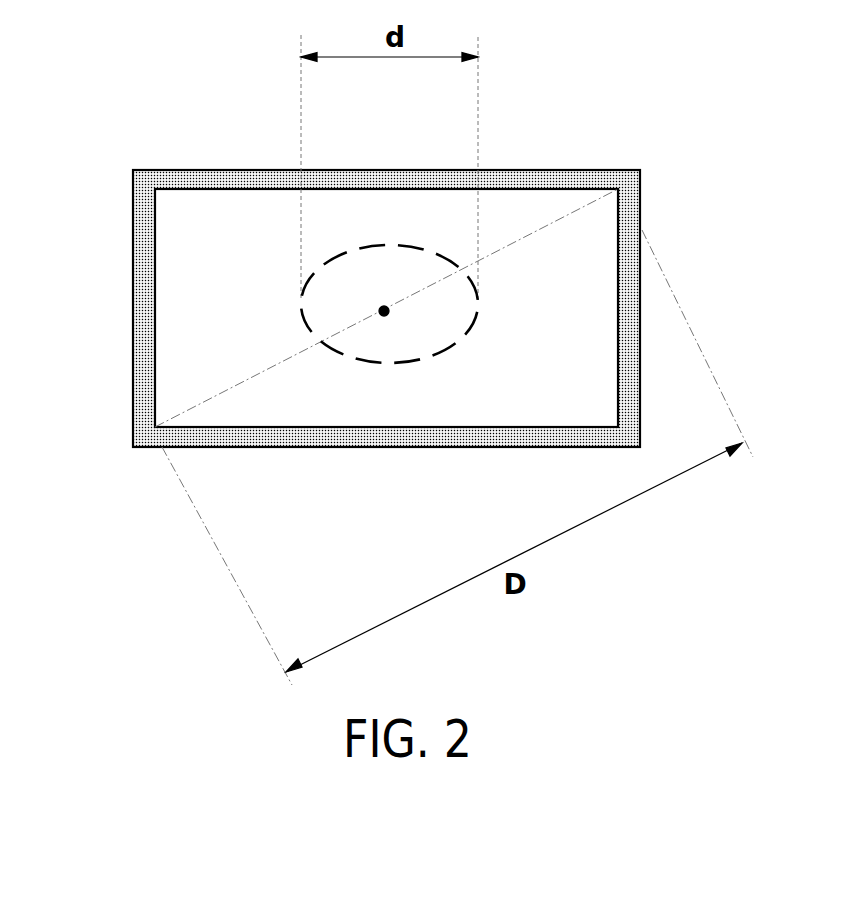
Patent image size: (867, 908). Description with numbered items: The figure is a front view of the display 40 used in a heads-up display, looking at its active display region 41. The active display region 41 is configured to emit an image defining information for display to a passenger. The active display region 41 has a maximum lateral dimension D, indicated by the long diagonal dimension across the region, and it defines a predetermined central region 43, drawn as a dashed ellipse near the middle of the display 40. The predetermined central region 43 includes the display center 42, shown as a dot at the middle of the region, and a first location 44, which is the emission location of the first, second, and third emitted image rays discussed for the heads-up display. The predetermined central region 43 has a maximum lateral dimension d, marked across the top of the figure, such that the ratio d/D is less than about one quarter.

The display 40 is at (629, 137).
The active display region 41 is at (172, 215).
The display center 42 is at (388, 315).
The predetermined central region 43 is at (372, 350).
The first location 44 is at (338, 291).